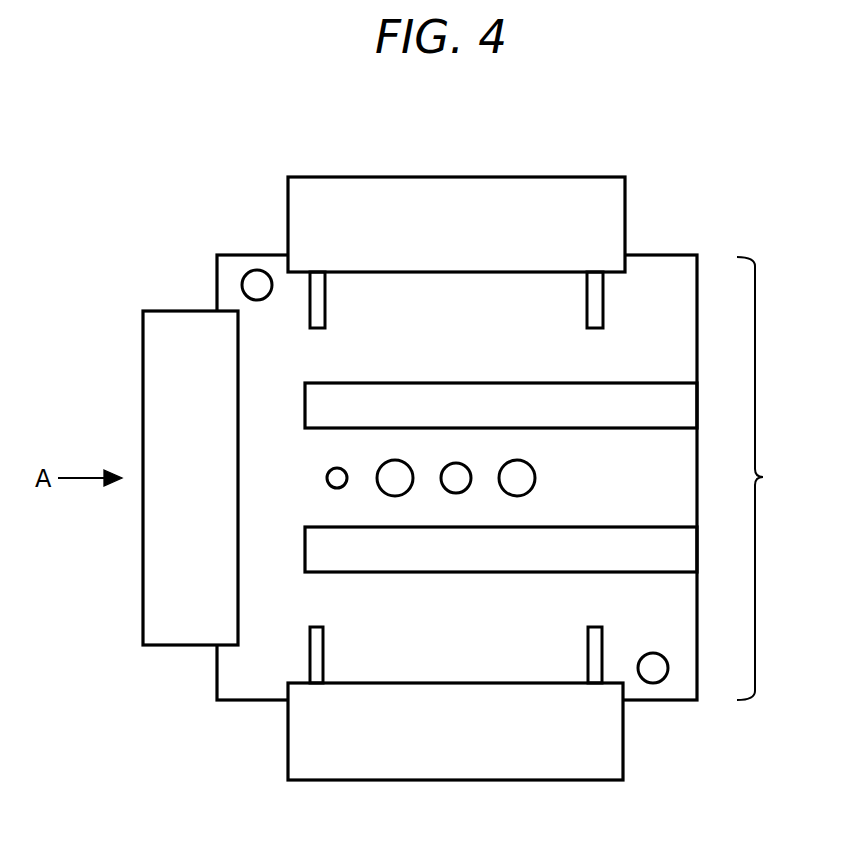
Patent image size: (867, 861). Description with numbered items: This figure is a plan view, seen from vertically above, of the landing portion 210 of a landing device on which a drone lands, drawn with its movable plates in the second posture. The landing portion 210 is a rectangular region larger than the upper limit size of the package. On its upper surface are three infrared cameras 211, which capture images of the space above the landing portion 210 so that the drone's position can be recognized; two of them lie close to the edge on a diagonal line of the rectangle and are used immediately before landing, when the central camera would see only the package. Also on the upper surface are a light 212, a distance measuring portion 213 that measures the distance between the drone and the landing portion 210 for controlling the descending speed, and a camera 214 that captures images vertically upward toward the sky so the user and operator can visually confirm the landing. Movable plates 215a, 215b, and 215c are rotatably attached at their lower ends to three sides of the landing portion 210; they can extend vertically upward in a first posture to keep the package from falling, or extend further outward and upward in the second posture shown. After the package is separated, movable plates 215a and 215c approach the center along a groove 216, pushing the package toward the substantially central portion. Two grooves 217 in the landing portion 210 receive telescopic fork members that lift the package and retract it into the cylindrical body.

The landing portion 210 is at (512, 477).
The infrared camera 211 is at (243, 283).
The light 212 is at (330, 476).
The distance measuring portion 213 is at (385, 469).
The camera 214 is at (557, 470).
The movable plate 215a is at (377, 185).
The movable plate 215b is at (148, 358).
The movable plate 215c is at (378, 773).
The groove 216 is at (315, 300).
The groove 217 is at (673, 387).